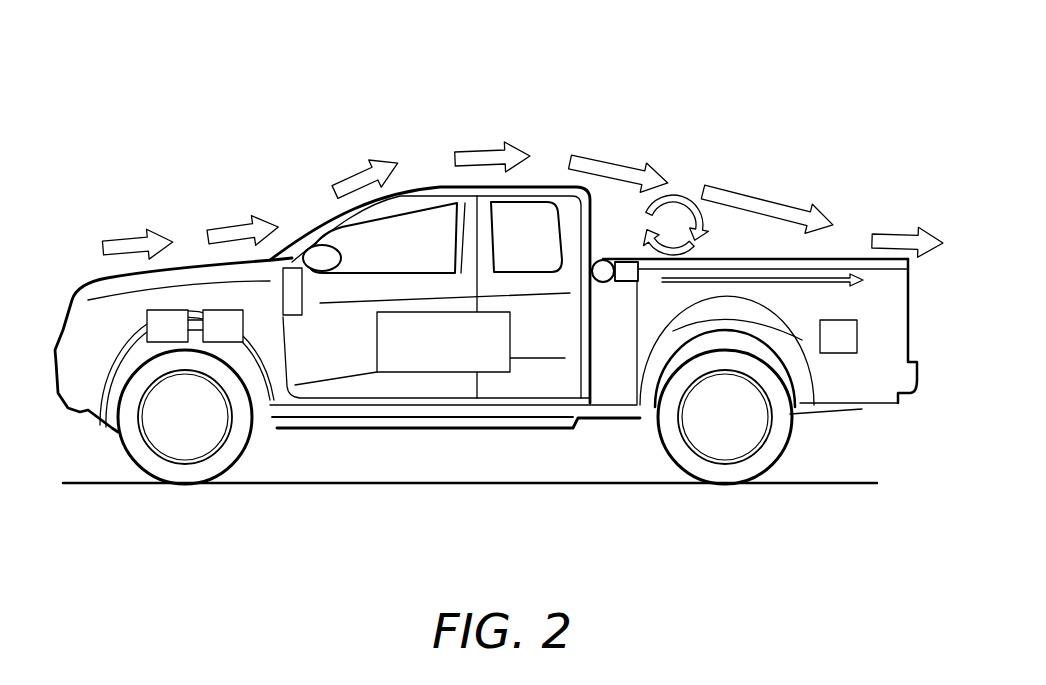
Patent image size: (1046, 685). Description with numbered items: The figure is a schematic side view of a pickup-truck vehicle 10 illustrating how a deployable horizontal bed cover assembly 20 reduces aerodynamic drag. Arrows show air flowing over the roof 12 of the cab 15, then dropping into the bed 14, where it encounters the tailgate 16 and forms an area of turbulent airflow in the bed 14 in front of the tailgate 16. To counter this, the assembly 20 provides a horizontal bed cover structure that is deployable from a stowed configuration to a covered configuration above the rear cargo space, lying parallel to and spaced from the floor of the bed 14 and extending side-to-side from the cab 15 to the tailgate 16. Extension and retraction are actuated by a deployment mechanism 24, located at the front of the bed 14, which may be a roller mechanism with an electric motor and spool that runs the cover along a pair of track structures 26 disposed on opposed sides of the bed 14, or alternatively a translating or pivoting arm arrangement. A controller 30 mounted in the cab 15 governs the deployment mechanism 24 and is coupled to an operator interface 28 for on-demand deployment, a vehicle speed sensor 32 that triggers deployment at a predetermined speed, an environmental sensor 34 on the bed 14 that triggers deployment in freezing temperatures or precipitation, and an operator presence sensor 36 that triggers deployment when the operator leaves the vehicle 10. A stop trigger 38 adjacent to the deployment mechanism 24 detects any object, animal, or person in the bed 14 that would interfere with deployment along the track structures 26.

The vehicle 10 is at (452, 117).
The roof 12 is at (547, 177).
The bed 14 is at (733, 243).
The cab 15 is at (607, 225).
The tailgate 16 is at (920, 283).
The deployable bed cover assembly 20 is at (835, 250).
The deployment mechanism 24 is at (603, 282).
The track structures 26 is at (890, 288).
The operator interface 28 is at (292, 307).
The controller 30 is at (442, 363).
The vehicle speed sensor 32 is at (163, 330).
The environmental sensor 34 is at (838, 353).
The operator presence sensor 36 is at (216, 330).
The stop trigger 38 is at (628, 282).